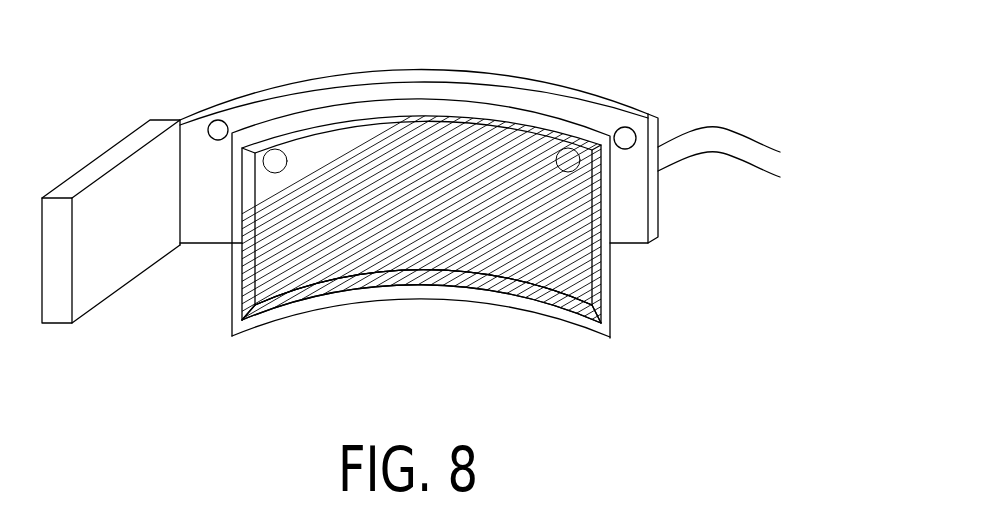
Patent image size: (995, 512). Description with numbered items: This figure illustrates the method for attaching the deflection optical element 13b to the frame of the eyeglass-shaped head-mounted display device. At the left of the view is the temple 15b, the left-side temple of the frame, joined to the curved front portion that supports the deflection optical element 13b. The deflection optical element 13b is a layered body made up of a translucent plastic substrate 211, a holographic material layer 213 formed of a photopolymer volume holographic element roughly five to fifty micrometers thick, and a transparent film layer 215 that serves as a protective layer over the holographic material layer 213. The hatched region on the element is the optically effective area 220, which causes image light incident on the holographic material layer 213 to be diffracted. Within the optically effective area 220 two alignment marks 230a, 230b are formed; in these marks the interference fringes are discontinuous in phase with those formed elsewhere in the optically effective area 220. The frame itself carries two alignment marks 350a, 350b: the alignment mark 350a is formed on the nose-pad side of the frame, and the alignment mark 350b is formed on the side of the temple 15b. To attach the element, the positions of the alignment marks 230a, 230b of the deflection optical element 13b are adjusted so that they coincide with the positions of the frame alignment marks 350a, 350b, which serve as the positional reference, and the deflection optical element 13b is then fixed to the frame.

The deflection optical element 13b is at (613, 280).
The temple 15b is at (103, 163).
The substrate 211 is at (448, 108).
The holographic material layer 213 is at (383, 286).
The transparent film layer 215 is at (421, 296).
The optically effective area 220 is at (341, 134).
The alignment mark 230a is at (567, 149).
The alignment mark 230b is at (277, 150).
The alignment mark 350a is at (627, 136).
The alignment mark 350b is at (218, 121).